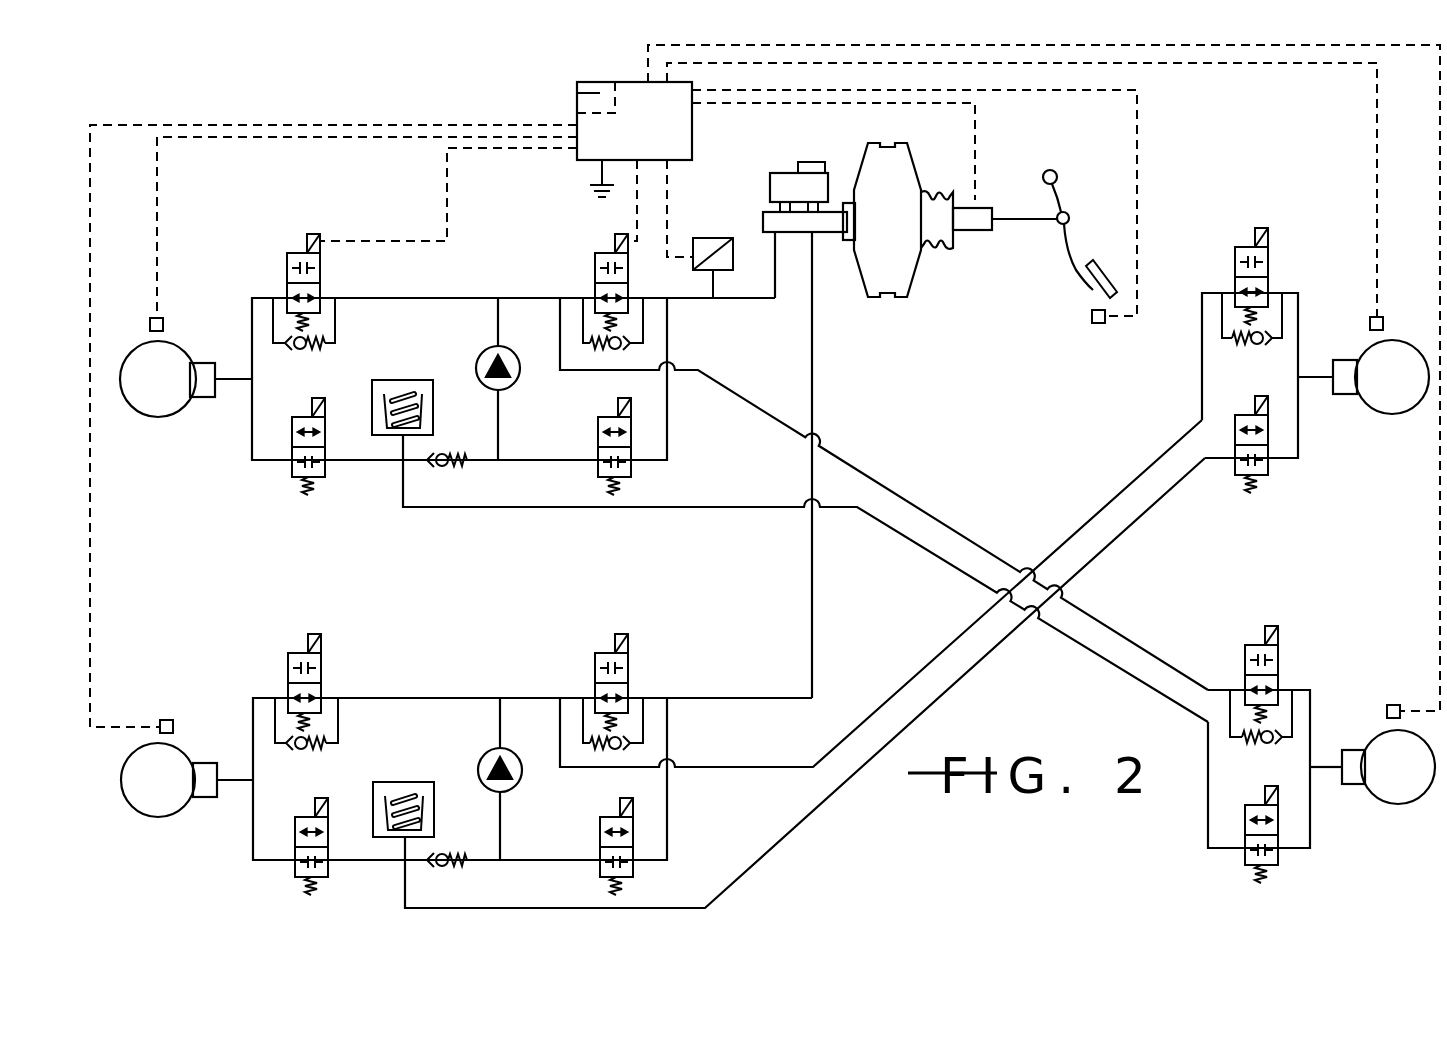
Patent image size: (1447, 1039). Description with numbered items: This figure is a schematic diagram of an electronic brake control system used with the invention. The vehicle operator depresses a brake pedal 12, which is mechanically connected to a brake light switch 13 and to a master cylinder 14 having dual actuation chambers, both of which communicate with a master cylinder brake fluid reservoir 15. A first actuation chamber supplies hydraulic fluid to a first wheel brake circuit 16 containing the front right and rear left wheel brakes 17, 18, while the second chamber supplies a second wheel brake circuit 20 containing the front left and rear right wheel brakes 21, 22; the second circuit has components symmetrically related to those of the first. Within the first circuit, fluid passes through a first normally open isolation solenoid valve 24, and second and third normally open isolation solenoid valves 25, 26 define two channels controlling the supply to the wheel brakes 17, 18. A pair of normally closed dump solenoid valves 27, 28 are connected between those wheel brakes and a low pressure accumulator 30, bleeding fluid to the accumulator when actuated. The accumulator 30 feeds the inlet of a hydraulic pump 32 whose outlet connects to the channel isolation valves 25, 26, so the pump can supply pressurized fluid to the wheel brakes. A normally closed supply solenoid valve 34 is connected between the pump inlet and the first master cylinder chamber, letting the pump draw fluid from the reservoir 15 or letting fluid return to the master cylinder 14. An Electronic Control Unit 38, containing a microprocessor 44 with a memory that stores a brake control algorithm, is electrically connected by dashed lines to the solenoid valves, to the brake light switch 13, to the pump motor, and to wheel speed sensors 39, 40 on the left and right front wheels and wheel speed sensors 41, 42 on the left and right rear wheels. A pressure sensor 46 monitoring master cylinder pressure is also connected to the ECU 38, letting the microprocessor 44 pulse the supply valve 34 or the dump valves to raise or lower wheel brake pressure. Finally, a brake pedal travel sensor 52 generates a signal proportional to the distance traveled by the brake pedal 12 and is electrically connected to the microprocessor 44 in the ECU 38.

The brake pedal 12 is at (1108, 258).
The brake light switch 13 is at (1098, 323).
The master cylinder 14 is at (845, 240).
The master cylinder brake fluid reservoir 15 is at (785, 173).
The first wheel brake circuit 16 is at (671, 478).
The front right wheel brake 17 is at (198, 397).
The rear left wheel brake 18 is at (1321, 759).
The second wheel brake circuit 20 is at (218, 600).
The front left wheel brake 21 is at (205, 762).
The rear right wheel brake 22 is at (1343, 394).
The first normally open isolation solenoid valve 24 is at (595, 270).
The second normally open isolation solenoid valve 25 is at (322, 278).
The third normally open isolation solenoid valve 26 is at (1278, 650).
The dump solenoid valve 27 is at (325, 428).
The dump solenoid valve 28 is at (1278, 855).
The low pressure accumulator 30 is at (433, 415).
The hydraulic pump 32 is at (480, 358).
The normally closed supply solenoid valve 34 is at (598, 440).
The Electronic Control Unit (ECU) 38 is at (692, 144).
The wheel speed sensor 39 is at (173, 726).
The wheel speed sensor 40 is at (163, 322).
The wheel speed sensor 41 is at (1387, 711).
The wheel speed sensor 42 is at (1370, 323).
The microprocessor 44 is at (576, 93).
The pressure sensor 46 is at (700, 238).
The brake pedal travel sensor 52 is at (955, 235).